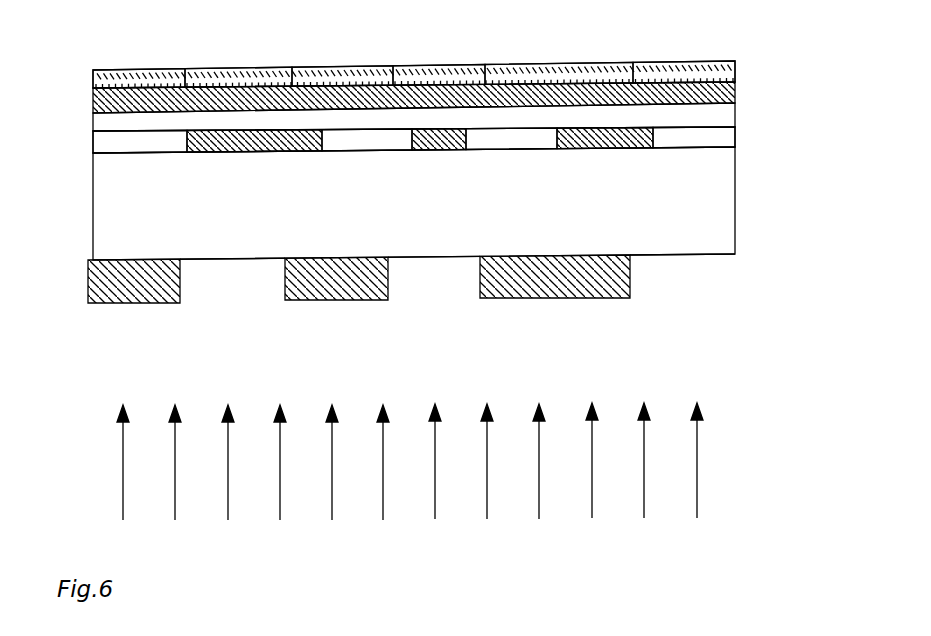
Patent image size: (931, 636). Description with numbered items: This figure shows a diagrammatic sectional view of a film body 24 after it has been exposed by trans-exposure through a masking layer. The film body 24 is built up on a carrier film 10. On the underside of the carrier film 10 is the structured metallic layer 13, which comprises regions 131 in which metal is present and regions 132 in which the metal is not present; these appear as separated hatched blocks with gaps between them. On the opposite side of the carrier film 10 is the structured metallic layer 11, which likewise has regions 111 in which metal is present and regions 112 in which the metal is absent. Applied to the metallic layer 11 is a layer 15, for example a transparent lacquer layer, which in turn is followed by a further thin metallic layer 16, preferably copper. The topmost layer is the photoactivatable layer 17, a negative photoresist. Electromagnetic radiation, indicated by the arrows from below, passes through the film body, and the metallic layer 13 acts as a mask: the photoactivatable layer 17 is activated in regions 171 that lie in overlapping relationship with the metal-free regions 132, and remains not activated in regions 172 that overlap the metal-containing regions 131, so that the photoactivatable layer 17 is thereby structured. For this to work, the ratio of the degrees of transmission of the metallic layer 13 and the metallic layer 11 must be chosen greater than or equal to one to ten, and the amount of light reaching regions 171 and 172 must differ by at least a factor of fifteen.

The film body 24 is at (80, 306).
The photoactivatable layer 17 is at (738, 70).
The regions 172 is at (137, 71).
The regions 171 is at (252, 71).
The metallic layer 16 is at (738, 93).
The layer 15 is at (738, 116).
The metallic layer 11 is at (738, 140).
The regions 111 is at (247, 153).
The regions 112 is at (132, 153).
The carrier film 10 is at (735, 203).
The metallic layer 13 is at (435, 300).
The regions 131 is at (130, 304).
The regions 132 is at (227, 300).